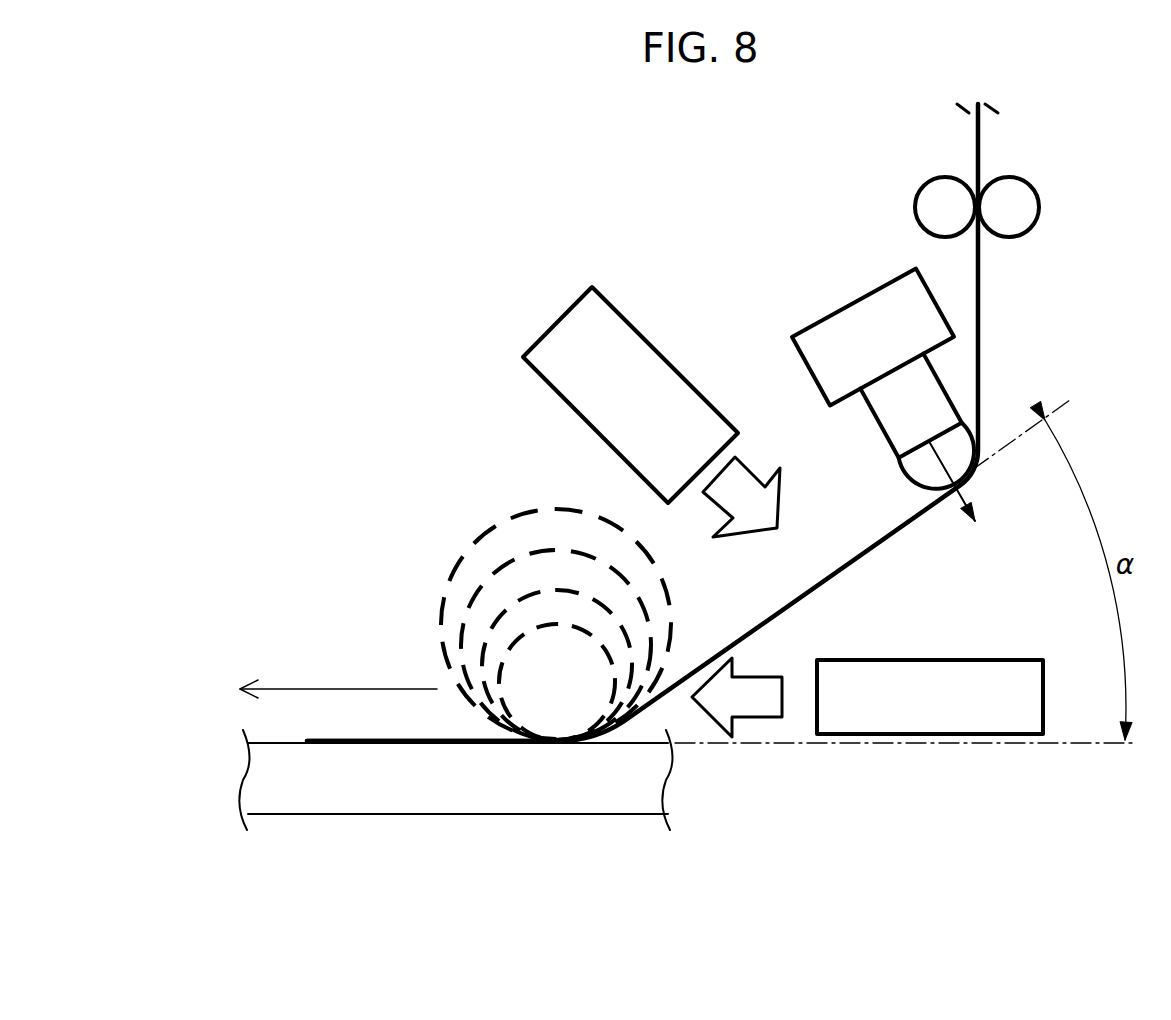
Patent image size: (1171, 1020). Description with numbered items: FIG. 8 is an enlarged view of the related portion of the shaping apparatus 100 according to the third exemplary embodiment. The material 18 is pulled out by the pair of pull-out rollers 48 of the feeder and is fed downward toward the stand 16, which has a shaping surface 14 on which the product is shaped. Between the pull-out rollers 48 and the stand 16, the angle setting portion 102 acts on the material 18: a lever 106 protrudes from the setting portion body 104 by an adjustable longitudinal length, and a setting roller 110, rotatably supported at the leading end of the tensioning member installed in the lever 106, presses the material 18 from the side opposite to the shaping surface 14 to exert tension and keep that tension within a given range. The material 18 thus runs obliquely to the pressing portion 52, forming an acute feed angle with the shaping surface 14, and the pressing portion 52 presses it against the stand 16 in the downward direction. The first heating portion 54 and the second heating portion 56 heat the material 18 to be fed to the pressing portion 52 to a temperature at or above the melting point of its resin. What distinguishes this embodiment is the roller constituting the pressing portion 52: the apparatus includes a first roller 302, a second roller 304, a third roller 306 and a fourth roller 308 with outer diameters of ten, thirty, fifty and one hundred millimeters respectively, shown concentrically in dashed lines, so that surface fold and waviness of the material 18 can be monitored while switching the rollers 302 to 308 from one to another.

The shaping apparatus 100 is at (368, 223).
The material 18 is at (992, 140).
The pair of pull-out rollers 48 is at (948, 190).
The angle setting portion 102 is at (858, 292).
The setting portion body 104 is at (825, 328).
The lever 106 is at (885, 417).
The setting roller 110 is at (915, 470).
The first heating portion 54 is at (550, 320).
The pressing portion 52 is at (446, 490).
The fourth roller 308 is at (478, 540).
The third roller 306 is at (490, 573).
The second roller 304 is at (505, 602).
The first roller 302 is at (507, 645).
The shaping surface 14 is at (268, 741).
The stand 16 is at (573, 818).
The second heating portion 56 is at (933, 741).